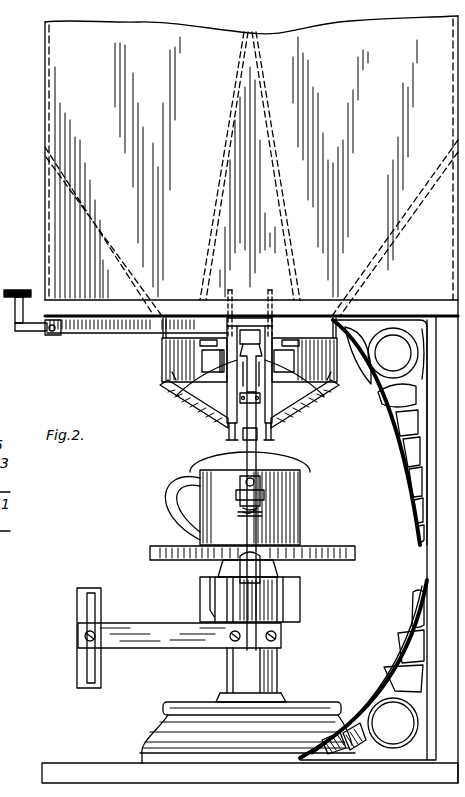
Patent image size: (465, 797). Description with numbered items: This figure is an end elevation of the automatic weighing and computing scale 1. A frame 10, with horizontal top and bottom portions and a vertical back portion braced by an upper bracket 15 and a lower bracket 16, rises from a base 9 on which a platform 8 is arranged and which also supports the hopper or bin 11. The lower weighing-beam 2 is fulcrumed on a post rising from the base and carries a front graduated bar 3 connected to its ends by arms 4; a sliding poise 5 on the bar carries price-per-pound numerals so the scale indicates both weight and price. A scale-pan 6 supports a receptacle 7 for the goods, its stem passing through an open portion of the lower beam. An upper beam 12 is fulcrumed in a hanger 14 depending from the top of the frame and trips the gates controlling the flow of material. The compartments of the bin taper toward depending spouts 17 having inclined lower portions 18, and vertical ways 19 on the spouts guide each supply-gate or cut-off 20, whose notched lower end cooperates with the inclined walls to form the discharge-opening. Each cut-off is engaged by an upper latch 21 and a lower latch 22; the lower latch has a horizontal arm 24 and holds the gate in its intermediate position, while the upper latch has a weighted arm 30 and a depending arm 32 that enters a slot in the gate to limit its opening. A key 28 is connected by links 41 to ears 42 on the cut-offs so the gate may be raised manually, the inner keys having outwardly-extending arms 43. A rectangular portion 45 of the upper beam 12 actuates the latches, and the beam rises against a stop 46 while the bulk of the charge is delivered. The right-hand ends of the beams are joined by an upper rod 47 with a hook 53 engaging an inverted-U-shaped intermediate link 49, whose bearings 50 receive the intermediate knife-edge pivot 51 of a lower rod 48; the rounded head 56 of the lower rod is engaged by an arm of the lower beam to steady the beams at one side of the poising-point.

The weighing and computing scale 1 is at (263, 669).
The lower weighing-beam 2 is at (284, 602).
The front graduated bar 3 is at (88, 680).
The arms 4 is at (179, 635).
The sliding poise 5 is at (78, 607).
The scale-pan 6 is at (152, 552).
The receptacle 7 is at (300, 520).
The platform 8 is at (188, 702).
The base 9 is at (250, 768).
The frame 10 is at (440, 509).
The hopper or bin 11 is at (251, 166).
The upper beam 12 is at (204, 361).
The hanger 14 is at (164, 360).
The upper bracket 15 is at (393, 380).
The lower bracket 16 is at (396, 684).
The spouts 17 is at (176, 318).
The inclined lower portions 18 is at (176, 392).
The vertical ways 19 is at (235, 426).
The supply-gate or cut-off 20 is at (238, 443).
The upper latch 21 is at (305, 297).
The lower latch 22 is at (160, 386).
The arm 24 is at (200, 412).
The key 28 is at (20, 289).
The arm 30 is at (205, 342).
The depending arm 32 is at (348, 352).
The links 41 is at (226, 424).
The ears 42 is at (248, 416).
The outwardly-extending arms 43 is at (251, 320).
The rectangular portion 45 is at (292, 362).
The stop 46 is at (5, 523).
The upper rod or bar 47 is at (282, 477).
The lower rod or bar 48 is at (247, 530).
The intermediate link 49 is at (241, 482).
The bearings 50 is at (5, 484).
The intermediate knife-edge pivot 51 is at (262, 495).
The hook 53 is at (300, 482).
The head 56 is at (244, 512).